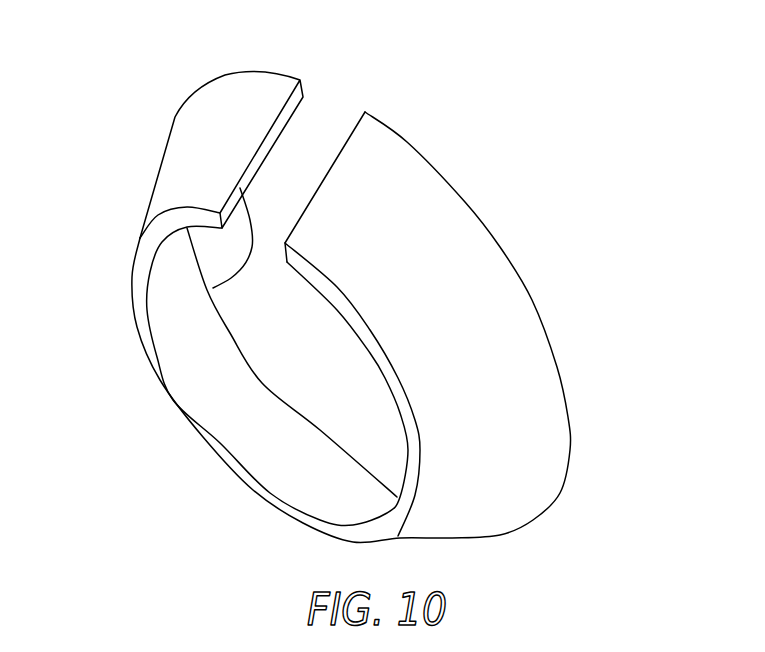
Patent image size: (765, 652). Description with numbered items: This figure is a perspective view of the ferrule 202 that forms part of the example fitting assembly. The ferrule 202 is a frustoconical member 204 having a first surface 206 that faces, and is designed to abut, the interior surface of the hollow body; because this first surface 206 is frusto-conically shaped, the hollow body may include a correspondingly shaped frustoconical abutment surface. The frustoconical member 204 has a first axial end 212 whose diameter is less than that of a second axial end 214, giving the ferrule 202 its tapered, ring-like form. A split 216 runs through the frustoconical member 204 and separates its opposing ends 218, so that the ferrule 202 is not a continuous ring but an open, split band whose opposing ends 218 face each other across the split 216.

The ferrule 202 is at (372, 293).
The frustoconical member 204 is at (485, 302).
The first surface 206 is at (537, 477).
The first axial end 212 is at (192, 432).
The second axial end 214 is at (407, 142).
The split 216 is at (323, 110).
The opposing ends 218 is at (213, 288).